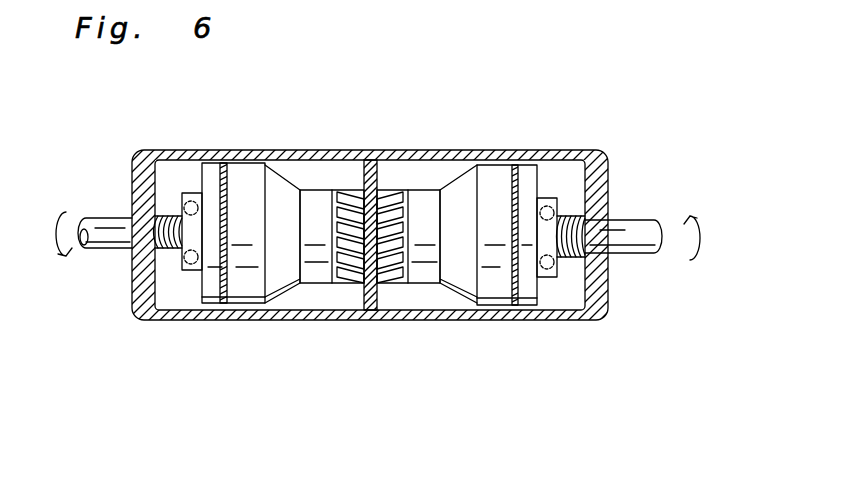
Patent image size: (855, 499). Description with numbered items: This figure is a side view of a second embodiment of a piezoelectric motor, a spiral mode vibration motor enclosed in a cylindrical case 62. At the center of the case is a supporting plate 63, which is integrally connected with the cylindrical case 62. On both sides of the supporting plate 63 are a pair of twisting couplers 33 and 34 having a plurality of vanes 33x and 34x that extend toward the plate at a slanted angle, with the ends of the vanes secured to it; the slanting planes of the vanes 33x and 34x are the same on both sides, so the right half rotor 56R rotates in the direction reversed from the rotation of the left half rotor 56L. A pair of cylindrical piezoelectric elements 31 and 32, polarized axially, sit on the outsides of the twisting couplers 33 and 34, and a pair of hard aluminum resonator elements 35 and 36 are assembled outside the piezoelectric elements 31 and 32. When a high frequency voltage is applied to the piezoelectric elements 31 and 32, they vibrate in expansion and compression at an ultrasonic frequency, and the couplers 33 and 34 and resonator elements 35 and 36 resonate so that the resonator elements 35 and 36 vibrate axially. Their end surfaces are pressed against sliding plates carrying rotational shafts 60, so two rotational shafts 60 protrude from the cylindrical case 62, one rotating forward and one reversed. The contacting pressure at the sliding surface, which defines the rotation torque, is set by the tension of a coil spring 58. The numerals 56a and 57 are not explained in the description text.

The piezoelectric element 31 is at (437, 175).
The piezoelectric element 32 is at (315, 170).
The twisting coupler 33 is at (419, 247).
The vanes 33x is at (398, 257).
The twisting coupler 34 is at (350, 247).
The vanes 34x is at (353, 270).
The resonator element 35 is at (557, 188).
The resonator element 36 is at (205, 247).
The left half rotor 56L is at (207, 277).
The right half rotor 56R is at (528, 180).
The friction lining 56a is at (227, 303).
The bracket 57 is at (182, 250).
The coil spring 58 is at (165, 205).
The rotational shaft 60 is at (95, 245).
The cylindrical case 62 is at (310, 318).
The supporting plate 63 is at (372, 305).